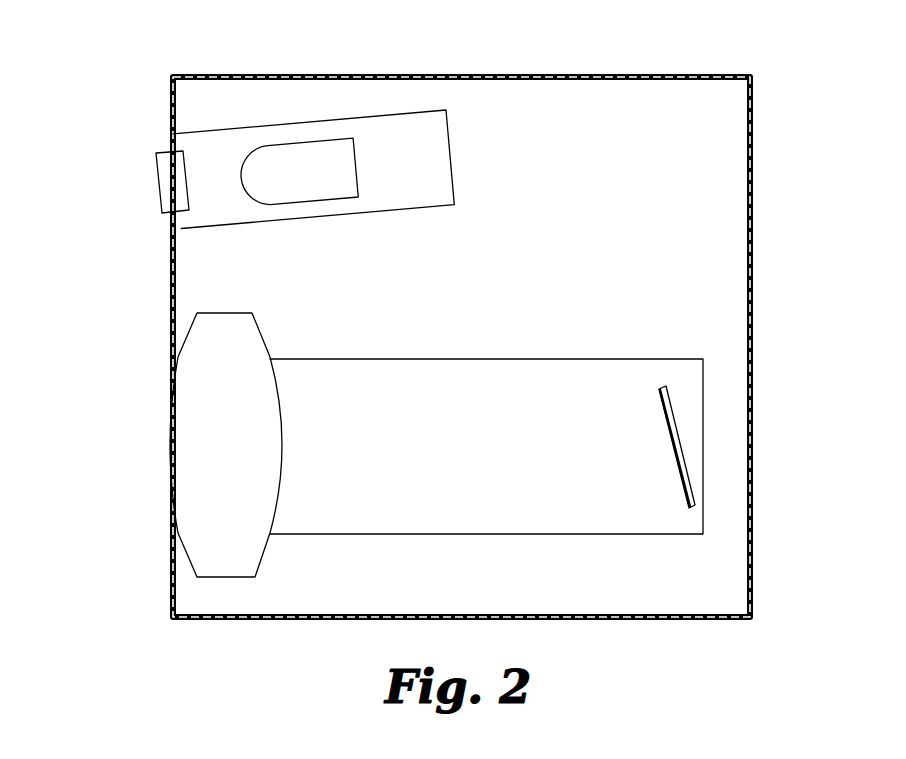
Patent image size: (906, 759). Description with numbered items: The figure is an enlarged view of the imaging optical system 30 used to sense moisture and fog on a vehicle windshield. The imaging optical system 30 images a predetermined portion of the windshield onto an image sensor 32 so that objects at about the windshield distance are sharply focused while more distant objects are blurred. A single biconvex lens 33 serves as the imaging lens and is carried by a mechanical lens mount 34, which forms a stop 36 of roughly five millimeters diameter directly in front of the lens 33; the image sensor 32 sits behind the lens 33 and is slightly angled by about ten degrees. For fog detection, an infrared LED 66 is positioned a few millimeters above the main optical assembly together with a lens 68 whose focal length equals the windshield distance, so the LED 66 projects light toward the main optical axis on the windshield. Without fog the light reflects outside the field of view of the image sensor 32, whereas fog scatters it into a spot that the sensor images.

The imaging optical system 30 is at (90, 493).
The image sensor 32 is at (678, 483).
The biconvex lens 33 is at (190, 552).
The mechanical lens mount 34 is at (700, 220).
The stop 36 is at (152, 468).
The infrared LED 66 is at (298, 201).
The lens 68 is at (158, 190).